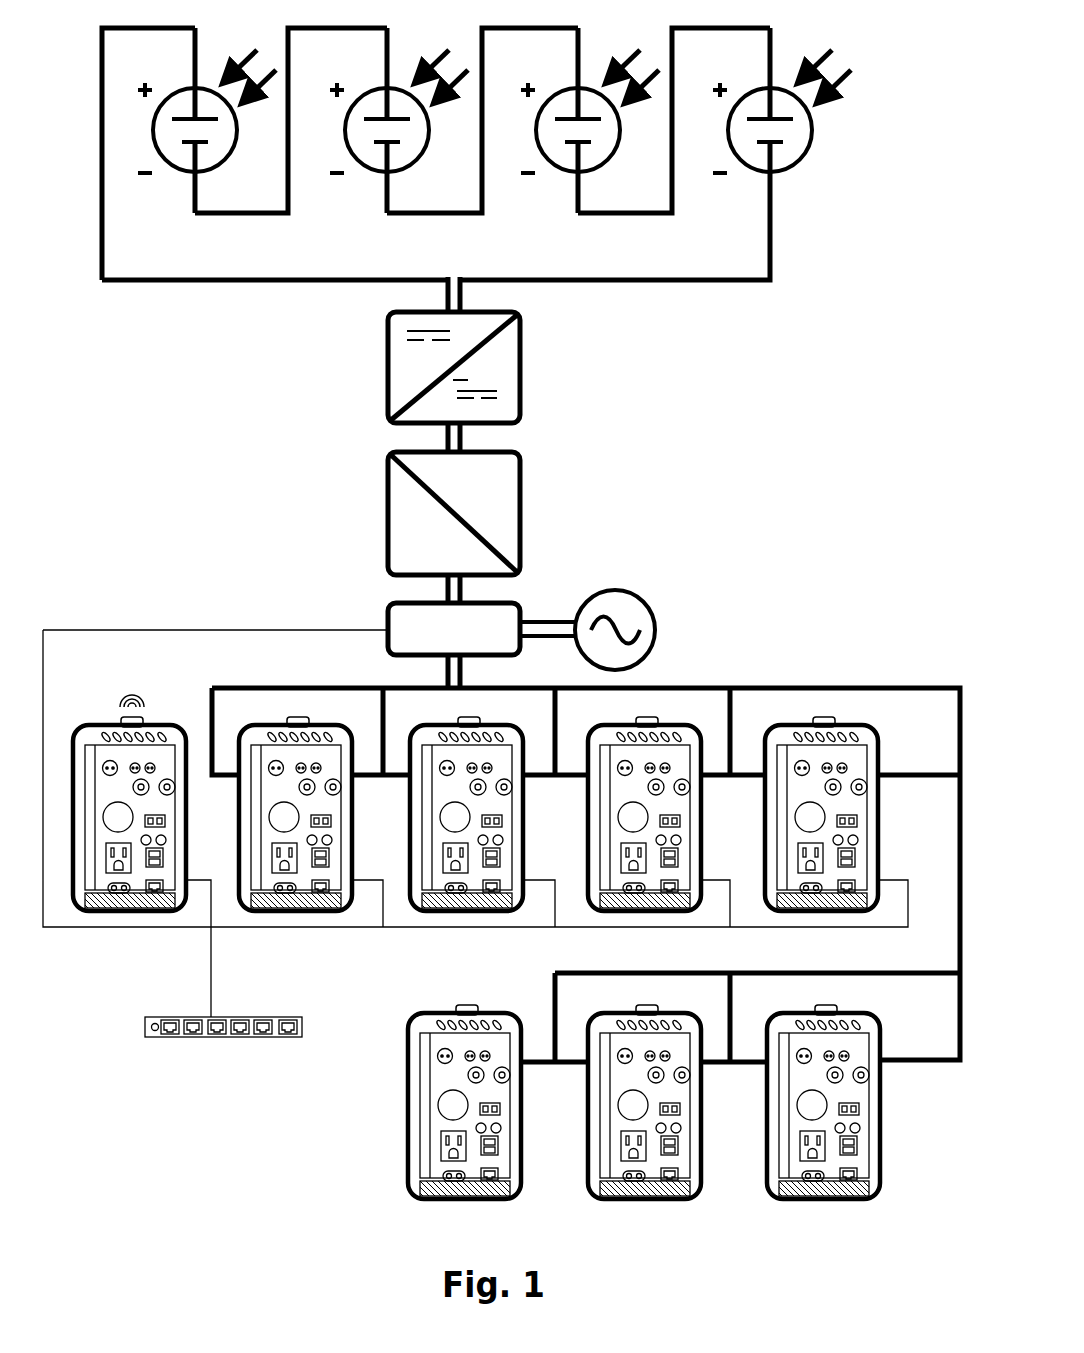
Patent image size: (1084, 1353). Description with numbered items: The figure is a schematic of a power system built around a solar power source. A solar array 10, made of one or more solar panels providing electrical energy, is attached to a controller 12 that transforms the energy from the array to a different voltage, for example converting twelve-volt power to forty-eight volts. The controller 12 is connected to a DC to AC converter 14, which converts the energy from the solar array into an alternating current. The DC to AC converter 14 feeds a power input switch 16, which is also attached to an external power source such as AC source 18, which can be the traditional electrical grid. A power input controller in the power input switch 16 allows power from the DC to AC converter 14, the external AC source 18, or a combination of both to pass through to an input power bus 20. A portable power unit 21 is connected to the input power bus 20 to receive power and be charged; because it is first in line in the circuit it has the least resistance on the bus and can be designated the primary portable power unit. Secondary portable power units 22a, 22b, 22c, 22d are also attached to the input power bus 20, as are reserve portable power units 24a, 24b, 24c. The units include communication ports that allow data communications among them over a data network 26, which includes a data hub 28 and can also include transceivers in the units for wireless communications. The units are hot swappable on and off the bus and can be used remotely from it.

The solar array 10 is at (100, 155).
The controller 12 is at (388, 378).
The DC to AC converter 14 is at (388, 488).
The power input switch 16 is at (388, 620).
The AC source 18 is at (590, 592).
The input power bus 20 is at (822, 688).
The portable power unit 21 is at (103, 725).
The secondary portable power unit 22a is at (264, 726).
The secondary portable power unit 22b is at (435, 726).
The secondary portable power unit 22c is at (613, 726).
The secondary portable power unit 22d is at (791, 726).
The reserve portable power unit 24a is at (432, 1013).
The reserve portable power unit 24b is at (612, 1013).
The reserve portable power unit 24c is at (791, 1013).
The data network 26 is at (208, 1005).
The data hub 28 is at (145, 1022).